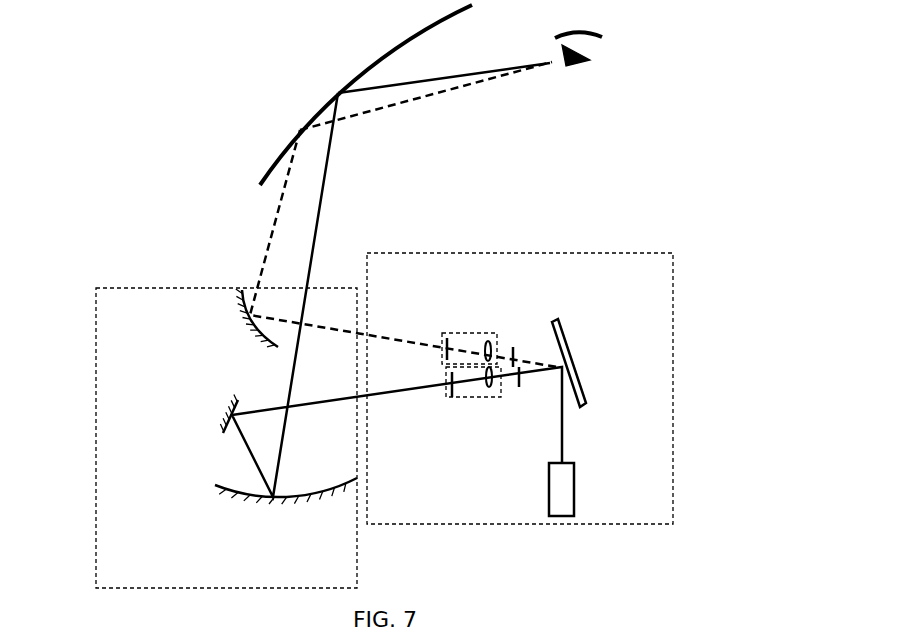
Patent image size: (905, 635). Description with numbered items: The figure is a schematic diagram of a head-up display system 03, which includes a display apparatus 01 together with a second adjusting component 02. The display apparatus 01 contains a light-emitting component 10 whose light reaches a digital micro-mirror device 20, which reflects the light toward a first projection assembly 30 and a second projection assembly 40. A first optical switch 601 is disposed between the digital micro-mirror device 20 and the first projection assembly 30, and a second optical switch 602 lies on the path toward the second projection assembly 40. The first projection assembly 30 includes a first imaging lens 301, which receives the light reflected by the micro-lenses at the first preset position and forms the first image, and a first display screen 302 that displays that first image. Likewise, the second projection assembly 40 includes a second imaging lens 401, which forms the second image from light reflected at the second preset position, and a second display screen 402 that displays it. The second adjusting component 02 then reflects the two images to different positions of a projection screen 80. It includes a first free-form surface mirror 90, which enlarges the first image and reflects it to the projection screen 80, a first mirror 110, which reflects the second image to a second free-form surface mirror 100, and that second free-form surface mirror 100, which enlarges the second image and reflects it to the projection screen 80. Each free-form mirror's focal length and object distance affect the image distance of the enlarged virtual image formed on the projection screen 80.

The head-up display system 03 is at (80, 176).
The projection screen 80 is at (317, 113).
The first free-form surface mirror 90 is at (245, 312).
The first mirror 110 is at (226, 431).
The second free-form surface mirror 100 is at (283, 500).
The second adjusting component 02 is at (97, 518).
The display apparatus 01 is at (673, 387).
The first projection assembly 30 is at (461, 340).
The first display screen 302 is at (445, 345).
The first imaging lens 301 is at (492, 342).
The first optical switch 601 is at (516, 348).
The second projection assembly 40 is at (475, 394).
The second display screen 402 is at (449, 383).
The second imaging lens 401 is at (487, 393).
The second optical switch 602 is at (521, 383).
The digital micro-mirror device 20 is at (573, 370).
The light-emitting component 10 is at (557, 487).